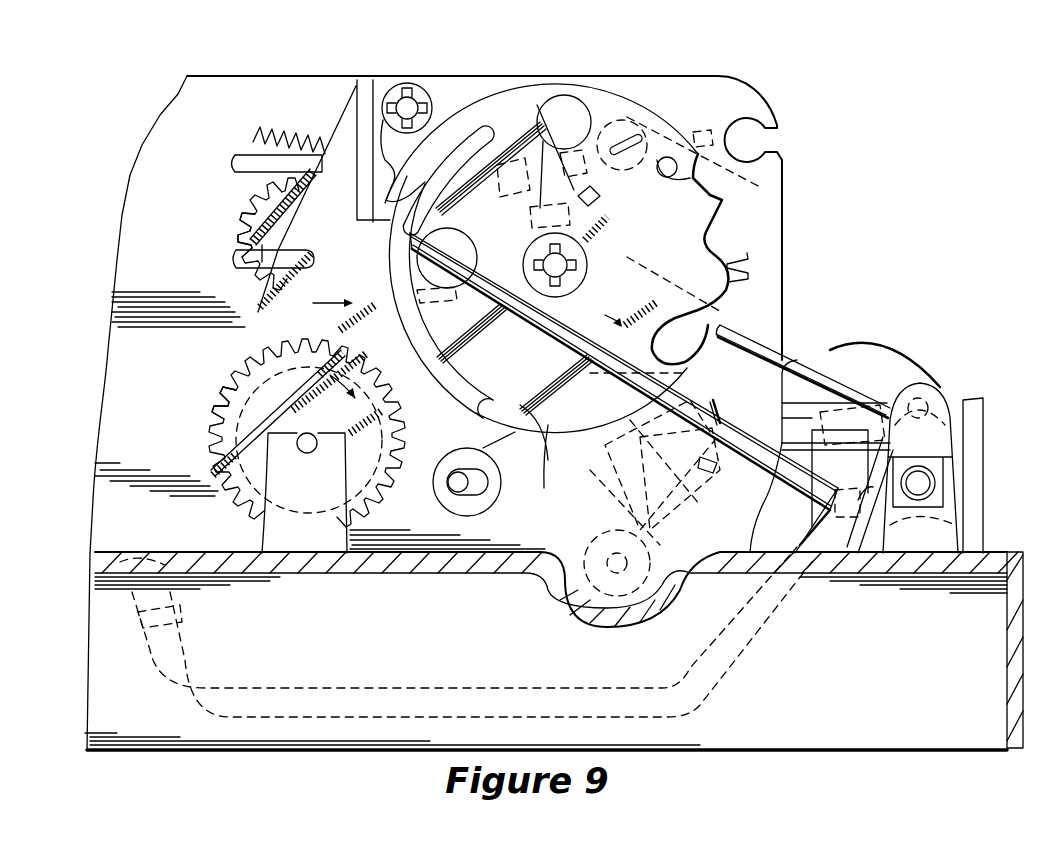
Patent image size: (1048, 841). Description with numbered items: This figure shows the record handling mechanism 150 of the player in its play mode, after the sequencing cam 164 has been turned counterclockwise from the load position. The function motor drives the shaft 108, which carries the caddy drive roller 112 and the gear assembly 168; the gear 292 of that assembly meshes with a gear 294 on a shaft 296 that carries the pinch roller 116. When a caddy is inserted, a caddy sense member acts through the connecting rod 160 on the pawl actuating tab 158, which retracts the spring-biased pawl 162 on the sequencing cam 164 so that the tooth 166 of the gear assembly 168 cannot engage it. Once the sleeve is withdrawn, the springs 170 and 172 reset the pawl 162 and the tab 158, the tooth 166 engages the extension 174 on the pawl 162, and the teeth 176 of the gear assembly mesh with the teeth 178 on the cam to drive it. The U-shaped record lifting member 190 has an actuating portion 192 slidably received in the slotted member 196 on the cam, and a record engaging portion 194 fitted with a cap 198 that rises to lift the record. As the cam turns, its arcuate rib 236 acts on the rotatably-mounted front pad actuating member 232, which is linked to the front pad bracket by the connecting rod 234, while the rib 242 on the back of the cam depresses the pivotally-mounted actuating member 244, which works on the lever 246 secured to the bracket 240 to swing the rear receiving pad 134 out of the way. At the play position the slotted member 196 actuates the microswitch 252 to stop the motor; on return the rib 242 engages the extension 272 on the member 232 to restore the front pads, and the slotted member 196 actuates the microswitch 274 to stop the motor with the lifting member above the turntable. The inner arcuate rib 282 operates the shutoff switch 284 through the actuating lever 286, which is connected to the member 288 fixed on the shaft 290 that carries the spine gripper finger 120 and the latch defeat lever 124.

The shaft 108 is at (440, 223).
The caddy drive roller 112 is at (275, 233).
The pinch roller 116 is at (241, 397).
The spine gripper finger 120 is at (808, 403).
The latch defeat lever 124 is at (887, 362).
The back receiving pad 134 is at (712, 466).
The record handling mechanism 150 is at (862, 606).
The pawl actuating tab 158 is at (450, 100).
The connecting rod 160 is at (240, 157).
The pawl 162 is at (725, 255).
The sequencing cam 164 is at (528, 97).
The tooth 166 is at (293, 311).
The gear assembly 168 is at (267, 200).
The spring 170 is at (628, 118).
The spring 172 is at (268, 133).
The extension 174 is at (720, 207).
The teeth 176 is at (293, 343).
The teeth 178 is at (466, 437).
The record lifting member 190 is at (756, 624).
The actuating portion 192 is at (550, 331).
The record engaging portion 194 is at (393, 693).
The slotted member 196 is at (472, 249).
The cap 198 is at (177, 597).
The front pad actuating member 232 is at (357, 95).
The connecting rod 234 is at (238, 258).
The arcuate rib 236 is at (456, 380).
The bracket 240 is at (603, 572).
The rib 242 is at (598, 314).
The actuating member 244 is at (546, 465).
The lever 246 is at (700, 540).
The microswitch 252 is at (436, 306).
The extension 272 is at (512, 125).
The microswitch 274 is at (721, 401).
The inner arcuate rib 282 is at (583, 98).
The shutoff switch 284 is at (767, 254).
The actuating lever 286 is at (778, 330).
The member 288 is at (928, 400).
The shaft 290 is at (923, 483).
The gear 292 is at (255, 288).
The gear 294 is at (215, 449).
The shaft 296 is at (227, 468).